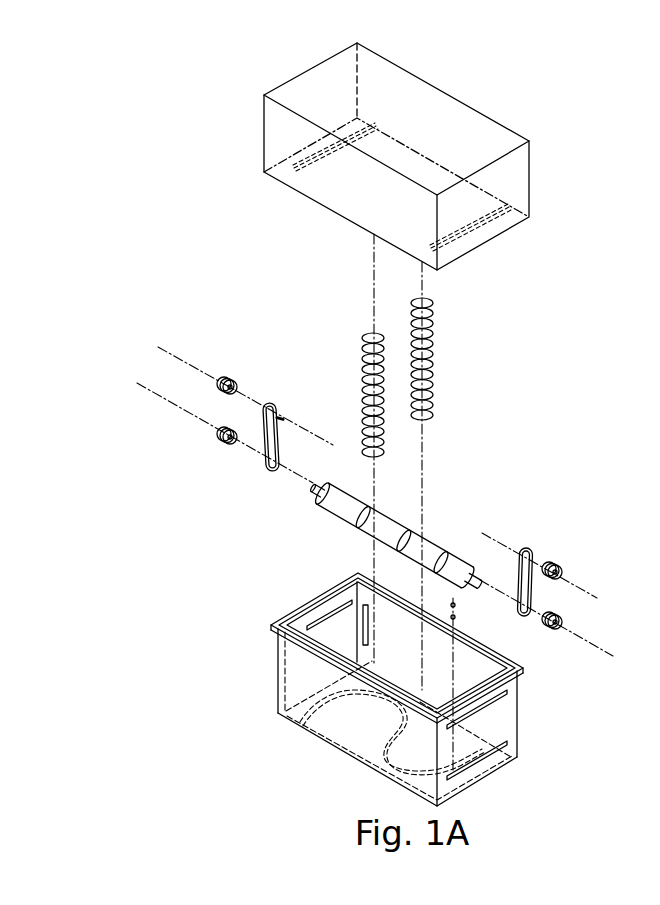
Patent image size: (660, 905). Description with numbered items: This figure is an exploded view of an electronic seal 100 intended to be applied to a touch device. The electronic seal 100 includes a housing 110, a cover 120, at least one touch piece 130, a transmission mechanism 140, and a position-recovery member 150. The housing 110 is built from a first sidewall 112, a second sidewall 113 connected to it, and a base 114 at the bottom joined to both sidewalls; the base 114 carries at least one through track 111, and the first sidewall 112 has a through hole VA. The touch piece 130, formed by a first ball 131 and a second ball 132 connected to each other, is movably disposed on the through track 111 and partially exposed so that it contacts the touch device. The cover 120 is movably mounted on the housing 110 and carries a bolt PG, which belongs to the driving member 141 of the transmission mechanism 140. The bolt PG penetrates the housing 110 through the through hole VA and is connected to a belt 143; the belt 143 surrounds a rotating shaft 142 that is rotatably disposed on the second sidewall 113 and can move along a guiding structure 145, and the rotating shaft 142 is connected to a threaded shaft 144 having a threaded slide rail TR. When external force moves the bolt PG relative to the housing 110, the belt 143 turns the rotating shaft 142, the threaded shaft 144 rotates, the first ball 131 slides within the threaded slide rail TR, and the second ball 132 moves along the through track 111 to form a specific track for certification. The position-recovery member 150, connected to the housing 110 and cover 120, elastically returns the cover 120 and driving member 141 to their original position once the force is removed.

The electronic seal 100 is at (95, 25).
The housing 110 is at (285, 662).
The through track 111 is at (330, 698).
The first sidewall 112 is at (492, 665).
The second sidewall 113 is at (312, 610).
The base 114 is at (347, 748).
The cover 120 is at (478, 128).
The touch piece 130 is at (469, 615).
The first ball 131 is at (528, 548).
The second ball 132 is at (455, 618).
The transmission mechanism 140 is at (207, 341).
The driving member 141 is at (532, 238).
The rotating shaft 142 is at (233, 376).
The belt 143 is at (263, 425).
The threaded shaft 144 is at (430, 547).
The guiding structure 145 is at (307, 626).
The position-recovery member 150 is at (433, 361).
The bolt PG is at (485, 222).
The threaded slide rail TR is at (403, 490).
The through hole VA is at (365, 628).